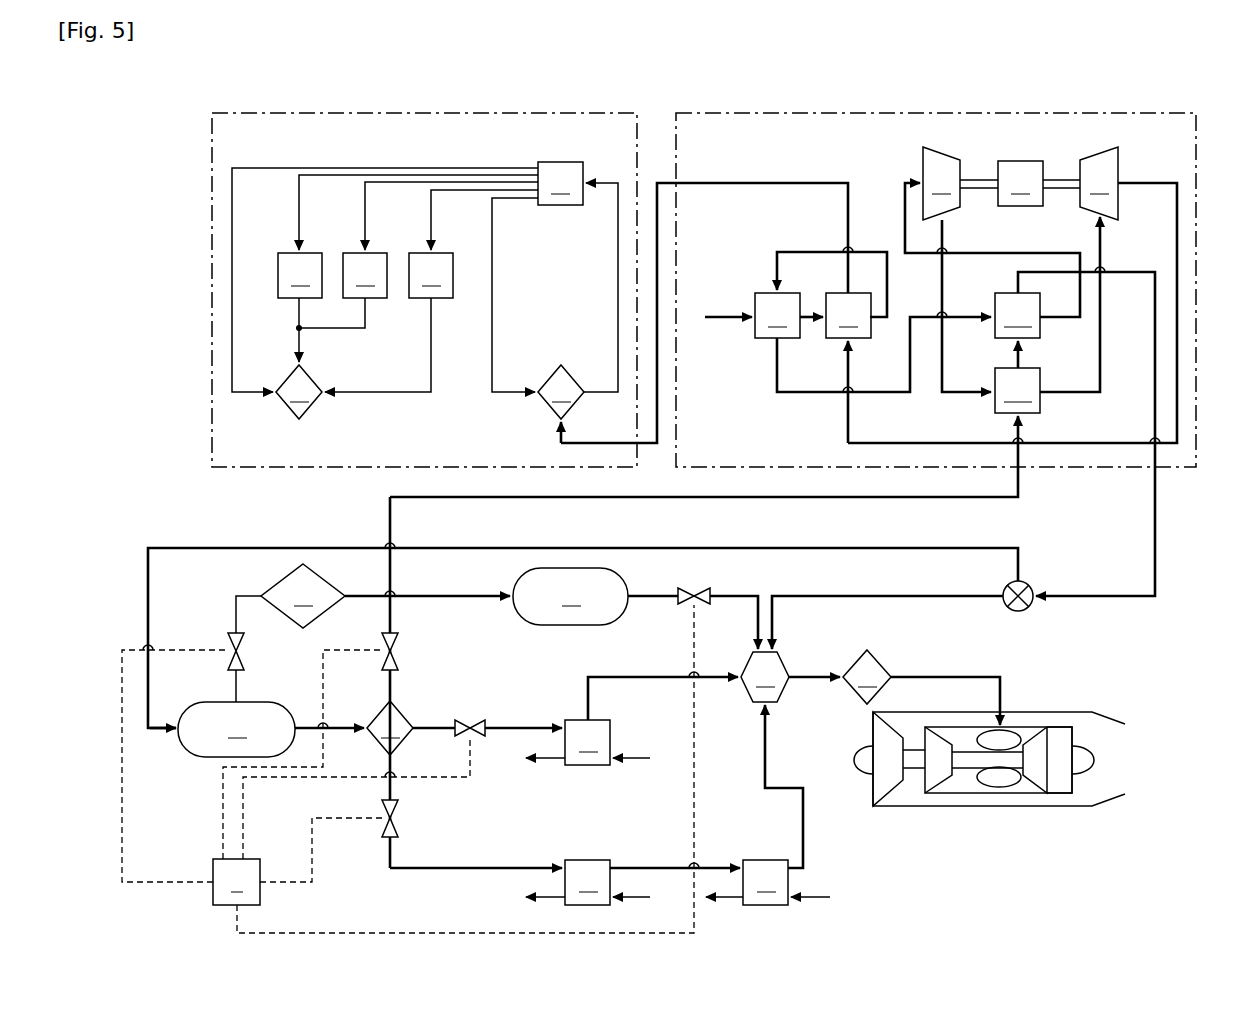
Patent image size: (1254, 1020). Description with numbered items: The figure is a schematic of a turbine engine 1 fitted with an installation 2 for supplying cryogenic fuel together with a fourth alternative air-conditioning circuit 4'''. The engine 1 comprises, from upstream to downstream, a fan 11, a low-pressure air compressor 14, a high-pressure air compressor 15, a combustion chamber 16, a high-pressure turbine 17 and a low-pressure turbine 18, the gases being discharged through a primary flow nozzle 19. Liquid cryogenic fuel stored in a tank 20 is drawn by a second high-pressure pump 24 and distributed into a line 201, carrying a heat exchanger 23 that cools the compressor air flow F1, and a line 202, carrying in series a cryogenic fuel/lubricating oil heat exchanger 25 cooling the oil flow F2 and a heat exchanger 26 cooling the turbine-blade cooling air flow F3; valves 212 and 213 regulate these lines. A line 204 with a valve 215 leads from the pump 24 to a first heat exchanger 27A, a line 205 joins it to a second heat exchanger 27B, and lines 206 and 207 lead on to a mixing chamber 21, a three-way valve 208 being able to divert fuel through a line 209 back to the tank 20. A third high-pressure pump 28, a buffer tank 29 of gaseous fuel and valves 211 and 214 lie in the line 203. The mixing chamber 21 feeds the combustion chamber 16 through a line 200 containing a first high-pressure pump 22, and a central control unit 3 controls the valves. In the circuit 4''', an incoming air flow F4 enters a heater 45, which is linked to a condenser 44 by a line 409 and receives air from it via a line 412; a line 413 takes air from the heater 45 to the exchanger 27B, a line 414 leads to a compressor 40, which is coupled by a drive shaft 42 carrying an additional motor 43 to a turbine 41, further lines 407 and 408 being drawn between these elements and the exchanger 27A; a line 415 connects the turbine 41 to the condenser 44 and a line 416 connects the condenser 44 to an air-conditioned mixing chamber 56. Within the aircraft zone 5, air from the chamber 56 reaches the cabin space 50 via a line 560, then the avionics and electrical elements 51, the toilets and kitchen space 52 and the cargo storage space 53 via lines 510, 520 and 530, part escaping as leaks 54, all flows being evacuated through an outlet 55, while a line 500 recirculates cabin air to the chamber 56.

The turbine engine 1 is at (1008, 748).
The installation for supplying cryogenic fuel 2 is at (292, 506).
The central control unit 3 is at (408, 769).
The air-conditioning circuit 4''' is at (957, 290).
The regulation unit 5 is at (212, 291).
The fan 11 is at (889, 760).
The low-pressure air compressor 14 is at (938, 758).
The high-pressure air compressor 15 is at (964, 760).
The combustion chamber 16 is at (998, 777).
The high-pressure turbine 17 is at (1033, 758).
The low-pressure turbine 18 is at (1058, 758).
The primary flow nozzle 19 is at (1108, 759).
The tank 20 is at (236, 729).
The mixing chamber 21 is at (765, 677).
The first high-pressure pump 22 is at (867, 677).
The heat exchanger 23 is at (587, 742).
The second high-pressure pump 24 is at (390, 728).
The cryogenic fuel/lubricating oil heat exchanger 25 is at (587, 882).
The heat exchanger 26 is at (765, 882).
The first heat exchanger 27A is at (1017, 390).
The second heat exchanger 27B is at (1017, 315).
The third high-pressure pump 28 is at (303, 596).
The buffer tank 29 is at (570, 596).
The compressor 40 is at (941, 183).
The turbine 41 is at (1099, 183).
The drive shaft 42 is at (980, 189).
The additional motor 43 is at (1020, 183).
The condenser 44 is at (848, 315).
The heater 45 is at (777, 315).
The cabin space 50 is at (560, 183).
The avionics and electrical elements 51 is at (431, 275).
The toilets and kitchen space 52 is at (365, 275).
The cargo storage space 53 is at (300, 275).
The leaks 54 is at (232, 228).
The outlet 55 is at (299, 392).
The air-conditioned mixing chamber 56 is at (561, 392).
The line 200 is at (944, 677).
The line 201 is at (628, 677).
The line 202 is at (520, 868).
The line 203 is at (452, 596).
The line 204 is at (872, 499).
The line 205 is at (1021, 358).
The line 206 is at (1155, 530).
The line 207 is at (872, 596).
The 3-way valve 208 is at (1015, 612).
The line 209 is at (695, 548).
The valve 211 is at (245, 660).
The valve 212 is at (470, 720).
The valve 213 is at (396, 828).
The valve 214 is at (688, 606).
The valve 215 is at (396, 660).
The fluid line 407 is at (943, 345).
The fluid line 408 is at (1100, 345).
The line 409 is at (820, 322).
The line 412 is at (812, 252).
The line 413 is at (872, 394).
The line 414 is at (1018, 253).
The line 415 is at (1177, 254).
The line 416 is at (812, 183).
The line 500 is at (492, 296).
The line 510 is at (431, 228).
The line 520 is at (365, 228).
The line 530 is at (299, 228).
The line 560 is at (618, 296).
The compressor air flow F1 is at (642, 760).
The lubricating oil flow F2 is at (642, 898).
The turbine blade cooling air flow F3 is at (822, 898).
The incoming air flow F4 is at (727, 313).